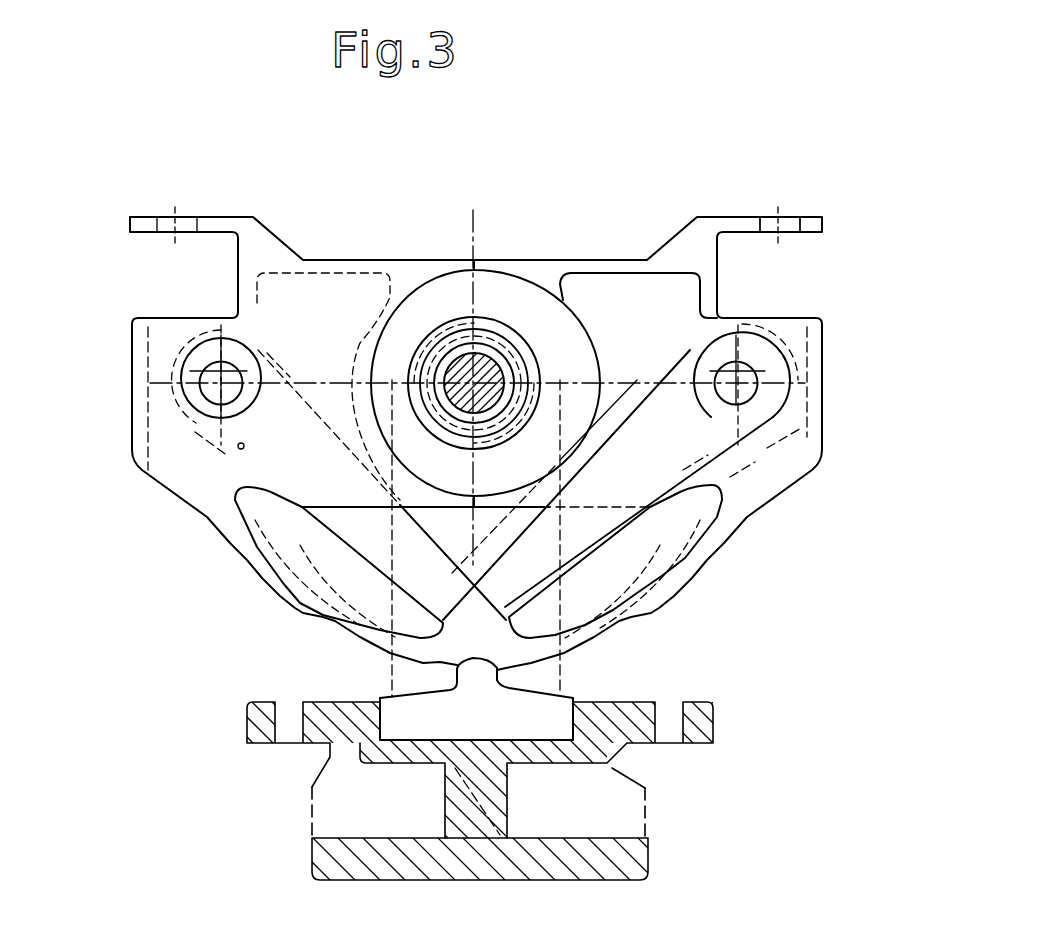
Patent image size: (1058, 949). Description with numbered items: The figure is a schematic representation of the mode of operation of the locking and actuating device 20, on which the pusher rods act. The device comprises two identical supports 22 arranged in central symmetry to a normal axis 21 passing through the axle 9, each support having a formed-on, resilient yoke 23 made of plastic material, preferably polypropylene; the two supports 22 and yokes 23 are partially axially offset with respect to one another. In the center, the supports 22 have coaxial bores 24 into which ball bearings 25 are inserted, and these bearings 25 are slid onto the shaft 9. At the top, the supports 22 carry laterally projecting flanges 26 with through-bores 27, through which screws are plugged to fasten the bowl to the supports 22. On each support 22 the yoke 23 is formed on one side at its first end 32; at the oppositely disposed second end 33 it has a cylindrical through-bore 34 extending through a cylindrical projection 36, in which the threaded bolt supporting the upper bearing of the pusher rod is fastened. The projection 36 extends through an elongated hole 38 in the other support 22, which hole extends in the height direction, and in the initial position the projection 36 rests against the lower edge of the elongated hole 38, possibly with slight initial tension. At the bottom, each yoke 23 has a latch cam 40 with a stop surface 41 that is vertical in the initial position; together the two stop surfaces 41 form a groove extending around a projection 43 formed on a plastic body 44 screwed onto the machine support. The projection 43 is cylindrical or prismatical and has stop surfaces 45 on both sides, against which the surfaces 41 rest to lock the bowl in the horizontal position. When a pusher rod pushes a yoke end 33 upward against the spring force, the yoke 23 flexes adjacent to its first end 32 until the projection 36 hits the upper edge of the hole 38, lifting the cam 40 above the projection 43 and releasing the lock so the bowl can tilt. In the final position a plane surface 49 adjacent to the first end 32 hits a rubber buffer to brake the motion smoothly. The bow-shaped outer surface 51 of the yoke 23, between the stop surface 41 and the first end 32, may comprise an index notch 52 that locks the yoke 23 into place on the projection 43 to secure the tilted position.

The axle 9 is at (467, 378).
The locking and actuating device 20 is at (820, 491).
The normal axis 21 is at (471, 232).
The support 22 is at (167, 437).
The yoke 23 is at (700, 425).
The coaxial bore 24 is at (537, 370).
The ball bearing 25 is at (515, 357).
The flange 26 is at (813, 225).
The through-bore 27 is at (789, 225).
The first end 32 is at (237, 526).
The second end 33 is at (168, 506).
The cylindrical through-bore 34 is at (747, 390).
The cylindrical projection 36 is at (193, 395).
The elongated hole 38 is at (208, 342).
The latch cam 40 is at (440, 662).
The stop surface 41 is at (495, 538).
The projection 43 is at (473, 670).
The plastic body 44 is at (452, 708).
The stop surface 45 is at (515, 686).
The plane surface 49 is at (147, 490).
The outer surface 51 is at (245, 568).
The index notch 52 is at (325, 616).